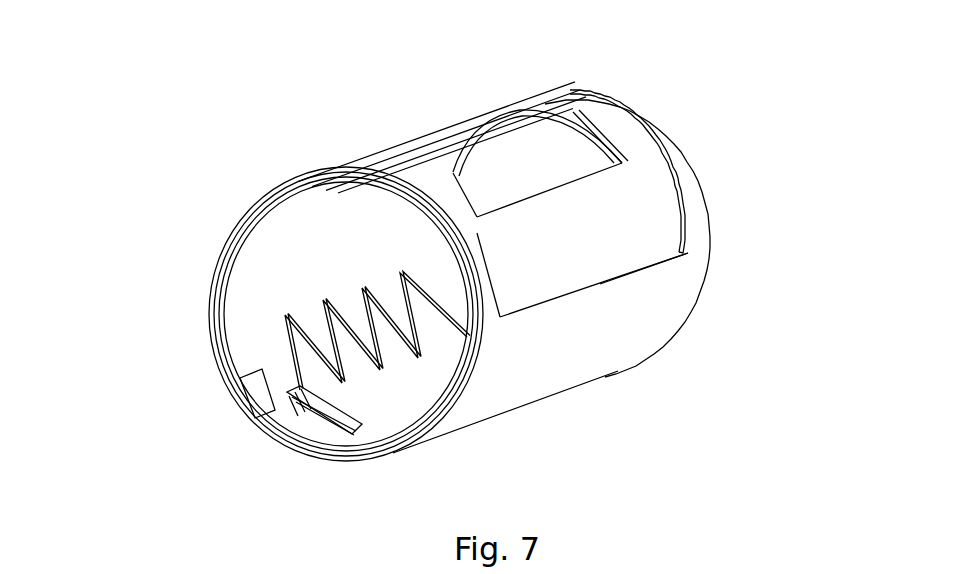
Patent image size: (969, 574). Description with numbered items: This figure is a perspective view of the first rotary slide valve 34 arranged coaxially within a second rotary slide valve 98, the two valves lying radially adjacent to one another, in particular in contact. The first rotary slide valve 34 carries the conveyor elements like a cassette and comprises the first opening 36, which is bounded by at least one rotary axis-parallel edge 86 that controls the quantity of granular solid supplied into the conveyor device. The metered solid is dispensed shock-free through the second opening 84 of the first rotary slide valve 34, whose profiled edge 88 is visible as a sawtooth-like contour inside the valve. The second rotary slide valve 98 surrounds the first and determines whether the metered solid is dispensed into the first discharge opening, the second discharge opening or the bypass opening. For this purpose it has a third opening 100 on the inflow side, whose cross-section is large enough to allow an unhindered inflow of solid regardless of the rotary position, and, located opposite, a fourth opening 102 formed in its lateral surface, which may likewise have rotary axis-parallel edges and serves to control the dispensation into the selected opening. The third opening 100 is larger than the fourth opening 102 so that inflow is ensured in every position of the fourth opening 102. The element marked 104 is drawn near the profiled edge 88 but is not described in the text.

The first rotary slide valve 34 is at (647, 213).
The first opening 36 is at (598, 140).
The second opening 84 is at (305, 357).
The rotary axis-parallel edge 86 is at (575, 120).
The profiled edge 88 is at (313, 319).
The second rotary slide valve 98 is at (688, 290).
The third opening 100 is at (640, 269).
The fourth opening 102 is at (393, 394).
The retaining strip 104 is at (266, 392).